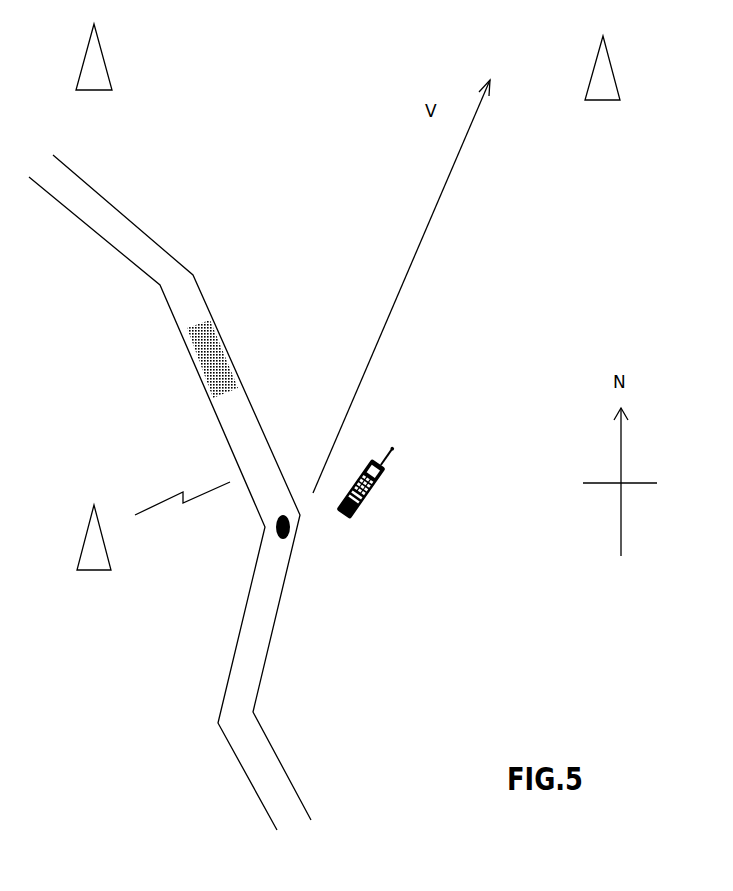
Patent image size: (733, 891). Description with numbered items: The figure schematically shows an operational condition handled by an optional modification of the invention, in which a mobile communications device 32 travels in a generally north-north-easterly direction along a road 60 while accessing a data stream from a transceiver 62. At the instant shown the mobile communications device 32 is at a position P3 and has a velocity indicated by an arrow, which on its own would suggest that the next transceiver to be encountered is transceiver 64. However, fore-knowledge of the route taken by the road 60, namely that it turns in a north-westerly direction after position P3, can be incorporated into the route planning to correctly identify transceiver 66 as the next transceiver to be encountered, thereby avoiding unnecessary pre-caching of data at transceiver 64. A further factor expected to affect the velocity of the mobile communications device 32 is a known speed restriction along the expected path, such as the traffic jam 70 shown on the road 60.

The road 60 is at (250, 680).
The traffic jam 70 is at (205, 363).
The position P3 is at (291, 535).
The mobile communications device 32 is at (372, 505).
The transceiver 62 is at (94, 560).
The transceiver 64 is at (597, 90).
The transceiver 66 is at (96, 66).